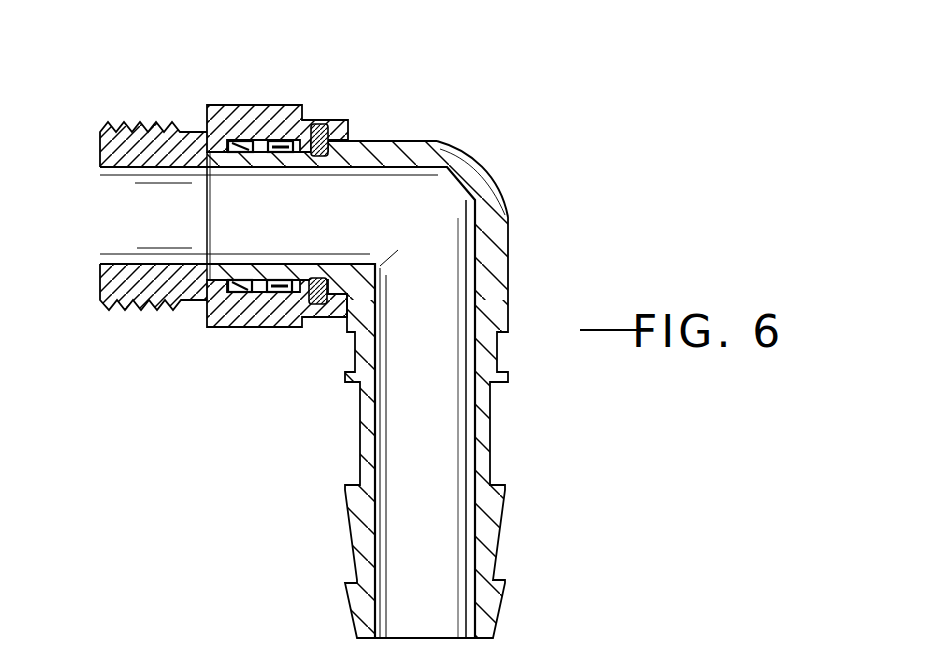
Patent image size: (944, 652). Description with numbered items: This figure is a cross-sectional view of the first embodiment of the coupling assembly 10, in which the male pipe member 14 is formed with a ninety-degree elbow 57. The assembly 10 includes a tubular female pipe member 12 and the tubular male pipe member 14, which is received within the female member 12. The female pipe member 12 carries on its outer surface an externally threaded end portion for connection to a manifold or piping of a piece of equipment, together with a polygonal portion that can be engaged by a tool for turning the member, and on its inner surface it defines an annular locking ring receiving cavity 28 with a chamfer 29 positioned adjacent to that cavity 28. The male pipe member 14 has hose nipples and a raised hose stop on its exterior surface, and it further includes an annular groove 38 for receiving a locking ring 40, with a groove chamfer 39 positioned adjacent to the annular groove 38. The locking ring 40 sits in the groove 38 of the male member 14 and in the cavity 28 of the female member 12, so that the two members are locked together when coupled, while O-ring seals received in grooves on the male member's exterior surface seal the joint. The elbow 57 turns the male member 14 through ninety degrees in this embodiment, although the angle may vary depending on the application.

The coupling assembly 10 is at (352, 330).
The female pipe member 12 is at (153, 83).
The male pipe member 14 is at (543, 430).
The annular locking ring receiving cavity 28 is at (310, 122).
The chamfer 29 is at (347, 138).
The annular groove 38 is at (323, 146).
The groove chamfer 39 is at (303, 145).
The locking ring 40 is at (322, 137).
The 90° elbow 57 is at (482, 173).